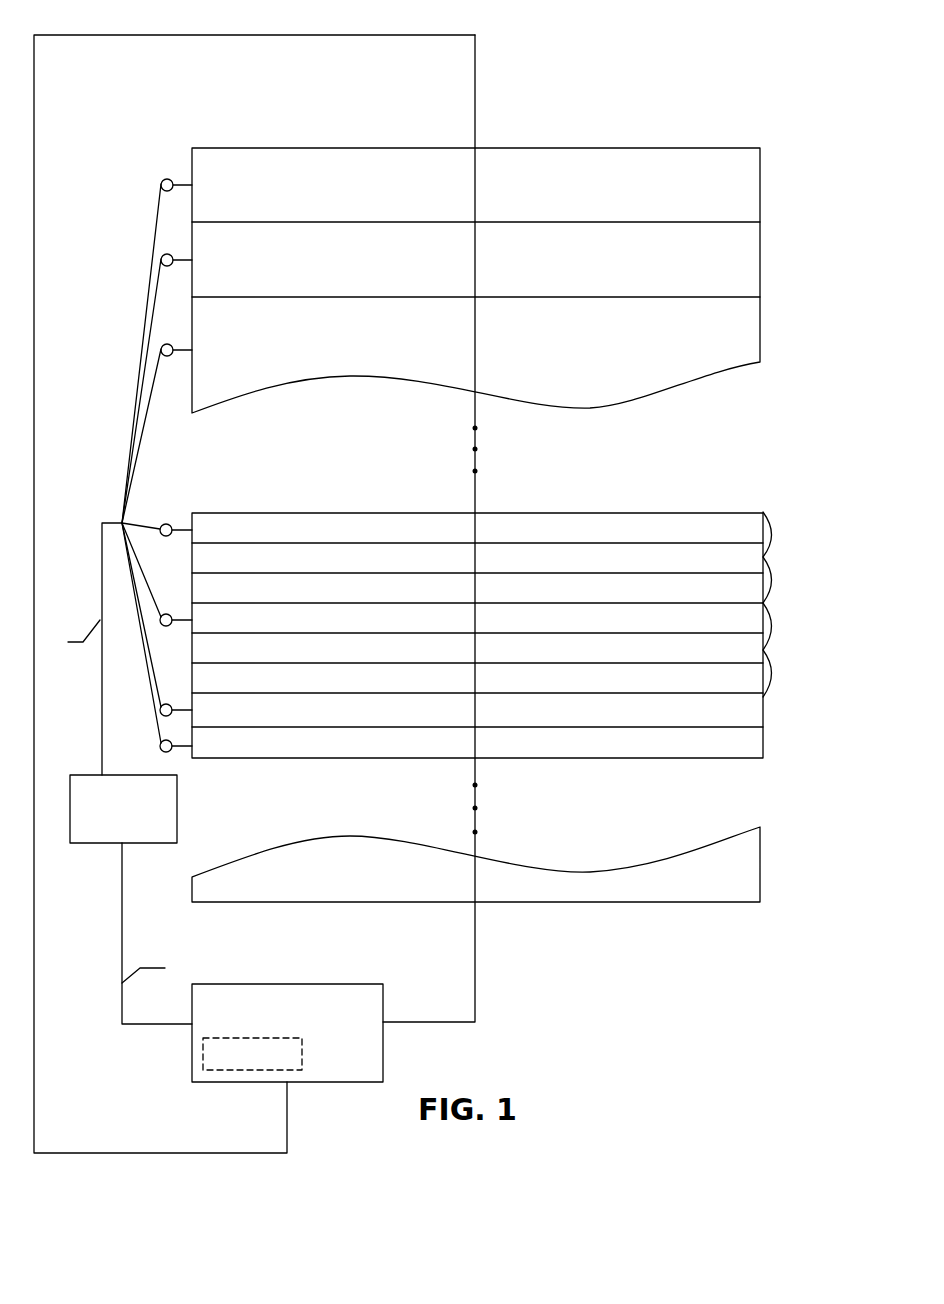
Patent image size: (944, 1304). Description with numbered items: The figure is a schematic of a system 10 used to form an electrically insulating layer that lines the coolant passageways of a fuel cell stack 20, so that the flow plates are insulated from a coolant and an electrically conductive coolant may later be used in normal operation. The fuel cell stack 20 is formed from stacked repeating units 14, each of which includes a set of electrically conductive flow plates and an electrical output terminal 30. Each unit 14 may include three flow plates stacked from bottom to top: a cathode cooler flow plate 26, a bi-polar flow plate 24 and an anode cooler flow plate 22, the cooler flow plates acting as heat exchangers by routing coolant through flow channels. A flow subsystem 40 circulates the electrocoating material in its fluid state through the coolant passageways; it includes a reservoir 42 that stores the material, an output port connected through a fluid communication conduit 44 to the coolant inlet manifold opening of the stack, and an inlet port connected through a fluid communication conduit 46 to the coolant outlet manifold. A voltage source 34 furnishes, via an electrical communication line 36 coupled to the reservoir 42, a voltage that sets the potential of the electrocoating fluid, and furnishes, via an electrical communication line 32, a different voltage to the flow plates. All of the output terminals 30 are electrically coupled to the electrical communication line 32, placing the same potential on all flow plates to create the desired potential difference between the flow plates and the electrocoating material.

The system 10 is at (826, 66).
The repeating unit 14 is at (529, 509).
The fuel cell stack 20 is at (534, 130).
The anode cooler flow plate 22 is at (524, 560).
The bi-polar flow plate 24 is at (524, 586).
The cathode cooler flow plate 26 is at (524, 629).
The electrical output terminal 30 is at (122, 444).
The electrical communication line 32 is at (81, 649).
The voltage source 34 is at (160, 809).
The electrical communication line 36 is at (158, 933).
The flow subsystem 40 is at (266, 1035).
The reservoir 42 is at (226, 1078).
The fluid communication conduit 44 is at (469, 528).
The fluid communication conduit 46 is at (254, 594).